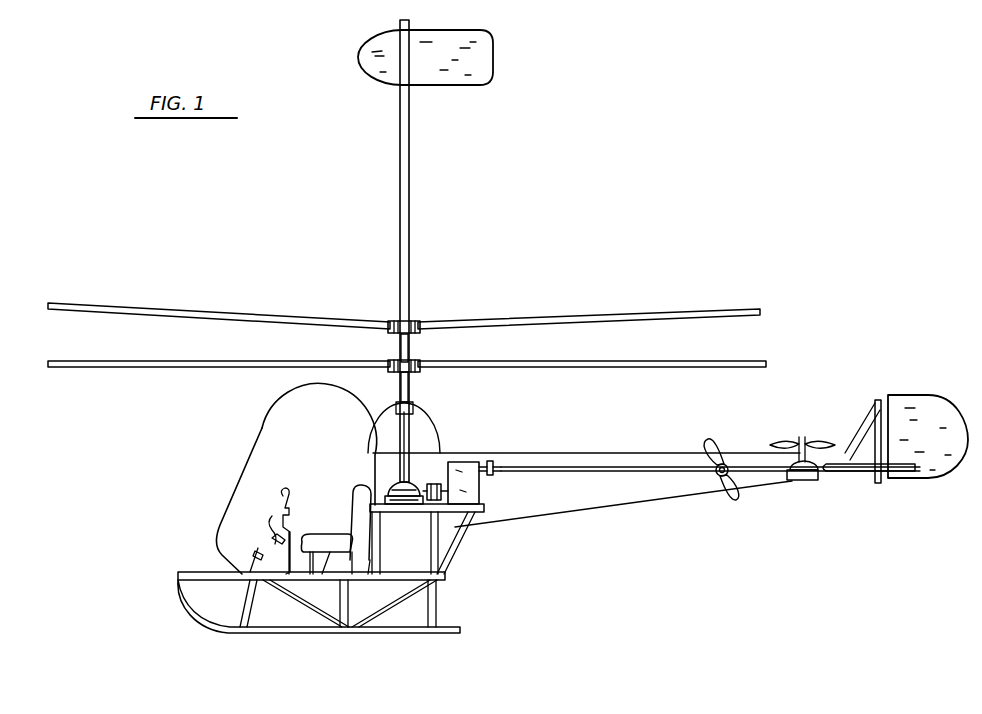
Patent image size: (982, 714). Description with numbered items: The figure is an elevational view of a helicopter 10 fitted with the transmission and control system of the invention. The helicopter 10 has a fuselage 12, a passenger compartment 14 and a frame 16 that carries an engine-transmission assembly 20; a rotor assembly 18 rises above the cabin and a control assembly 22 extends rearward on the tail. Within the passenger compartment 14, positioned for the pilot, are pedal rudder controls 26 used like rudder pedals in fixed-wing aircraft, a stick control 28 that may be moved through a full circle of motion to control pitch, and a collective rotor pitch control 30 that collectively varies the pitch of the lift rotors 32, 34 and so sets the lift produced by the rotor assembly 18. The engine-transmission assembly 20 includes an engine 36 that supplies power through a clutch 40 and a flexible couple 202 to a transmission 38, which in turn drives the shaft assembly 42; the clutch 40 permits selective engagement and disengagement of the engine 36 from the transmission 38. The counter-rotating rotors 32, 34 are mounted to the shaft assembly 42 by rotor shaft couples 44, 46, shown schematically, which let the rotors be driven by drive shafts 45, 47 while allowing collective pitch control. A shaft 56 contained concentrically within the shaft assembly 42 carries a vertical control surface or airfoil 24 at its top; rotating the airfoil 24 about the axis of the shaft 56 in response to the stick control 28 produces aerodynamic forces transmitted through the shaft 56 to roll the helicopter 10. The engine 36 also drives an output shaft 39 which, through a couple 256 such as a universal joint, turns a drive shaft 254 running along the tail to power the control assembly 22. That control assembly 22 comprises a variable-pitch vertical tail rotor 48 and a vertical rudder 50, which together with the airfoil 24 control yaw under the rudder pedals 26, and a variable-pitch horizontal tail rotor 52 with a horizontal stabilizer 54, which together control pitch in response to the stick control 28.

The helicopter 10 is at (232, 450).
The fuselage 12 is at (602, 518).
The passenger compartment 14 is at (222, 513).
The frame 16 is at (448, 540).
The rotor assembly 18 is at (375, 300).
The engine-transmission assembly 20 is at (433, 484).
The control assembly 22 is at (800, 500).
The vertical control surface or airfoil 24 is at (470, 51).
The pedal rudder controls 26 is at (258, 547).
The stick control 28 is at (300, 525).
The collective rotor pitch control 30 is at (272, 522).
The lift rotor 32 is at (535, 317).
The lift rotor 34 is at (600, 363).
The engine 36 is at (456, 463).
The transmission 38 is at (400, 478).
The engine output shaft 39 is at (492, 474).
The clutch 40 is at (420, 478).
The shaft assembly 42 is at (418, 350).
The rotor shaft couple 44 is at (415, 328).
The drive shaft 45 is at (397, 351).
The rotor shaft couple 46 is at (392, 373).
The drive shaft 47 is at (410, 380).
The vertical tail rotor 48 is at (718, 452).
The vertical rudder 50 is at (945, 425).
The horizontal tail rotor 52 is at (778, 440).
The horizontal stabilizer 54 is at (845, 472).
The shaft 56 is at (400, 162).
The flexible couple 202 is at (400, 457).
The drive shaft 254 is at (565, 466).
The couple 256 is at (493, 465).